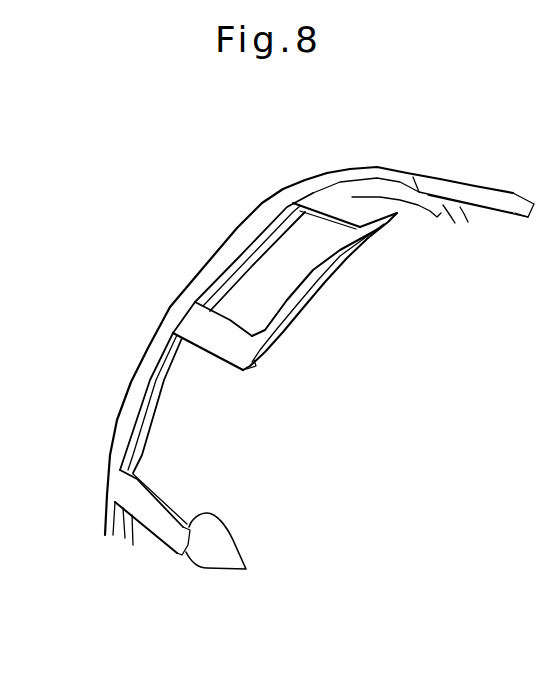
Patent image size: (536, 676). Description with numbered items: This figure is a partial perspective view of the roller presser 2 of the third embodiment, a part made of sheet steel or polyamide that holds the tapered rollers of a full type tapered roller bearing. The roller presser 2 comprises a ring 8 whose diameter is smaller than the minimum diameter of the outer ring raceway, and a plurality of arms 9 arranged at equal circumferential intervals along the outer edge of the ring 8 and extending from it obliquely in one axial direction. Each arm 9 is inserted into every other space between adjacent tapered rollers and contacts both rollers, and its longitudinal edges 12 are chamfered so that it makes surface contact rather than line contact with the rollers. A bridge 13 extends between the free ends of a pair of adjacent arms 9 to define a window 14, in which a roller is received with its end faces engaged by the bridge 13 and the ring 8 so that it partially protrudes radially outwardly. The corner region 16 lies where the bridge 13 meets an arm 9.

The roller presser 2 is at (301, 181).
The ring 8 is at (203, 268).
The arm 9 is at (137, 497).
The longitudinal edge 12 is at (246, 569).
The bridge 13 is at (327, 278).
The window 14 is at (297, 232).
The crossbar 16 is at (250, 368).